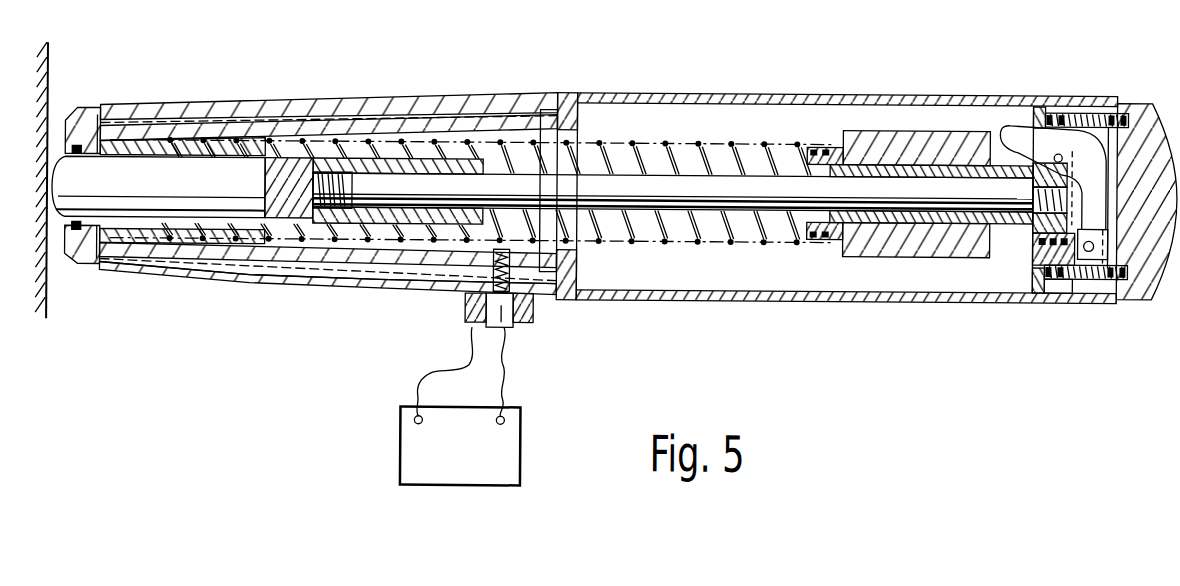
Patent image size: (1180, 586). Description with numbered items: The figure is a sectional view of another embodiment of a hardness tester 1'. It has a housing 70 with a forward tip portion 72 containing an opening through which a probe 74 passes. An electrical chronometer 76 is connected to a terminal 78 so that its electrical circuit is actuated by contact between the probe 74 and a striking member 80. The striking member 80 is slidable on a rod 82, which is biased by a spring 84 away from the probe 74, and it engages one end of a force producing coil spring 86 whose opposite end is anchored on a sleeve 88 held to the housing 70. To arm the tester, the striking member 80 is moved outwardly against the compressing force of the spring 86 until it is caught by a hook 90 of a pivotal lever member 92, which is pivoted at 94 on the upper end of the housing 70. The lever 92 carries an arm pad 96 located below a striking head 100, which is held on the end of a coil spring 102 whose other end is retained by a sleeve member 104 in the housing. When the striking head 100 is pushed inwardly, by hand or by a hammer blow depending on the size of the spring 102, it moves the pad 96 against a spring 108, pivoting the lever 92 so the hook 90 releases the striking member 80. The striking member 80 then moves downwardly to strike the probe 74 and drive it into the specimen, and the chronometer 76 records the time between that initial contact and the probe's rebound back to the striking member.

The housing 70 is at (632, 298).
The forward tip portion 72 is at (82, 256).
The probe 74 is at (212, 191).
The electrical chronometer 76 is at (512, 449).
The terminal 78 is at (537, 314).
The striking member 80 is at (920, 257).
The rod 82 is at (764, 192).
The spring 84 is at (323, 205).
The force producing coil spring 86 is at (692, 246).
The sleeve 88 is at (157, 244).
The hook 90 is at (1002, 130).
The pivotal lever member 92 is at (1093, 158).
The pivot 94 is at (1056, 150).
The arm pad 96 is at (1100, 297).
The striking head 100 is at (1166, 126).
The coil spring 102 is at (1082, 297).
The sleeve member 104 is at (1037, 274).
The spring 108 is at (1053, 297).
The hardness tester 1' is at (723, 332).